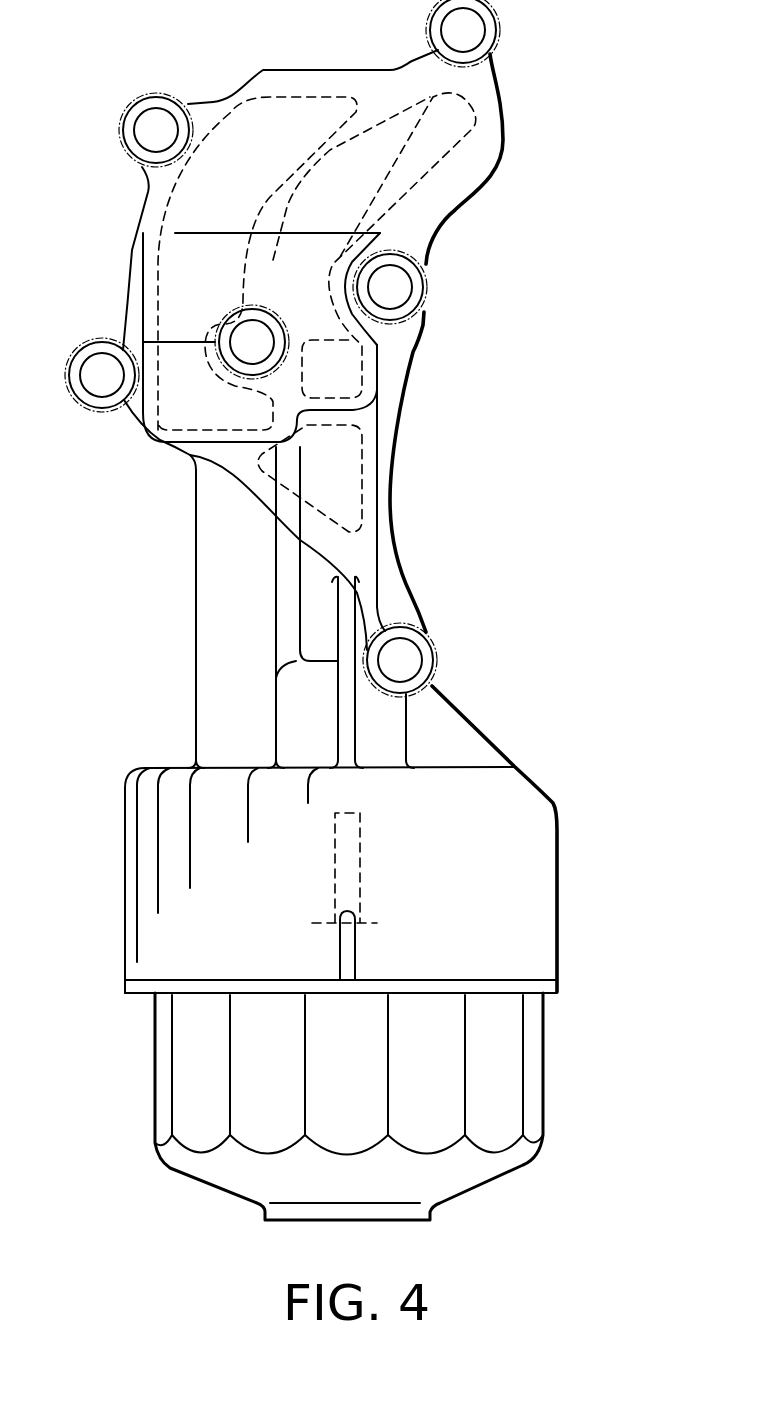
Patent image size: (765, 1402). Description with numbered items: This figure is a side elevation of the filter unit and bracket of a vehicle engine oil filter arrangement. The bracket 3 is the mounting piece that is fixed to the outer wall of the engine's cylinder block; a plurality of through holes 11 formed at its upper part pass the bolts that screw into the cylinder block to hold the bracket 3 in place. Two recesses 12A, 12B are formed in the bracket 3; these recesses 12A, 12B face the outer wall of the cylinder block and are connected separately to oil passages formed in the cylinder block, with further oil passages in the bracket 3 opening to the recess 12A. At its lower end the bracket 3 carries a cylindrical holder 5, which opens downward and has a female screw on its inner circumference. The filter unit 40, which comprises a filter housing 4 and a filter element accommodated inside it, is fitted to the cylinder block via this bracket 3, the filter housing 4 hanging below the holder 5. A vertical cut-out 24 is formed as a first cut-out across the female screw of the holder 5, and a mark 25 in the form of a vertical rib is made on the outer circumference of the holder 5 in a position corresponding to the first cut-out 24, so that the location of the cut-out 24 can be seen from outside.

The bracket 3 is at (383, 488).
The filter housing 4 is at (530, 1100).
The cylindrical holder 5 is at (533, 877).
The through holes 11 is at (465, 48).
The recess 12A is at (422, 168).
The recess 12B is at (213, 188).
The first cut-out 24 is at (350, 847).
The mark 25 is at (350, 957).
The filter unit 40 is at (550, 1043).